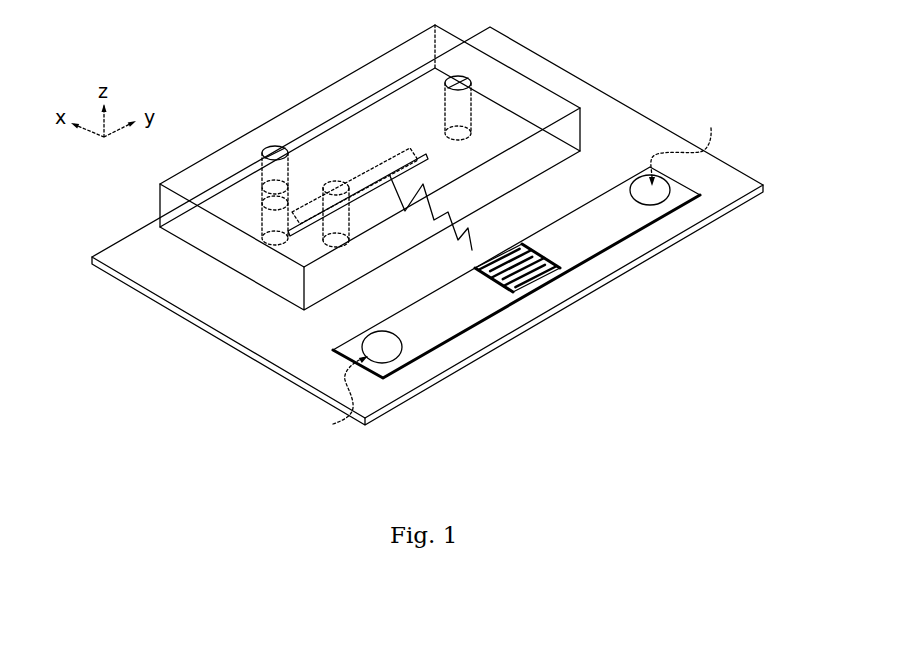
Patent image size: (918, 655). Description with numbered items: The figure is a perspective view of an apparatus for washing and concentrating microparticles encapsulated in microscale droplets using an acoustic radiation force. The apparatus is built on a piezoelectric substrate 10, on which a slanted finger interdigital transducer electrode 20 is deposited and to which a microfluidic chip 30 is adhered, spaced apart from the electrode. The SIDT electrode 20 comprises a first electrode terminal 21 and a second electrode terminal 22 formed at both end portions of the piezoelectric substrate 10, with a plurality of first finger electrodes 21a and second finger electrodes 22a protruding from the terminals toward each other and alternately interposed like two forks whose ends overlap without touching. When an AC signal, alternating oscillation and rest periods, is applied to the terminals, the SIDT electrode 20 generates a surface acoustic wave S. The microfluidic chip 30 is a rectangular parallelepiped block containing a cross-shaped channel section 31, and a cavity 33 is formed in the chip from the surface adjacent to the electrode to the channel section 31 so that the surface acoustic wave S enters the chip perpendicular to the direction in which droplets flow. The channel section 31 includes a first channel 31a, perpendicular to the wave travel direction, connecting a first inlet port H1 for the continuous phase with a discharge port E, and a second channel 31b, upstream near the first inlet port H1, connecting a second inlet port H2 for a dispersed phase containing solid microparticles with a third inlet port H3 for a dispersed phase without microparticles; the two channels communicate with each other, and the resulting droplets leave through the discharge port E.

The piezoelectric substrate 10 is at (257, 339).
The microfluidic chip 30 is at (324, 76).
The discharge port E is at (465, 78).
The first inlet port H1 is at (265, 223).
The second inlet port H2 is at (273, 147).
The third inlet port H3 is at (348, 243).
The slanted finger interdigital transducer electrode 20 is at (515, 387).
The first electrode terminal 21 is at (417, 345).
The second electrode terminal 22 is at (621, 225).
The first finger electrodes 21a is at (553, 288).
The second finger electrodes 22a is at (516, 297).
The channel section 31 is at (340, 335).
The first channel 31a is at (314, 240).
The second channel 31b is at (287, 240).
The cavity 33 is at (427, 236).
The surface acoustic wave S is at (479, 228).